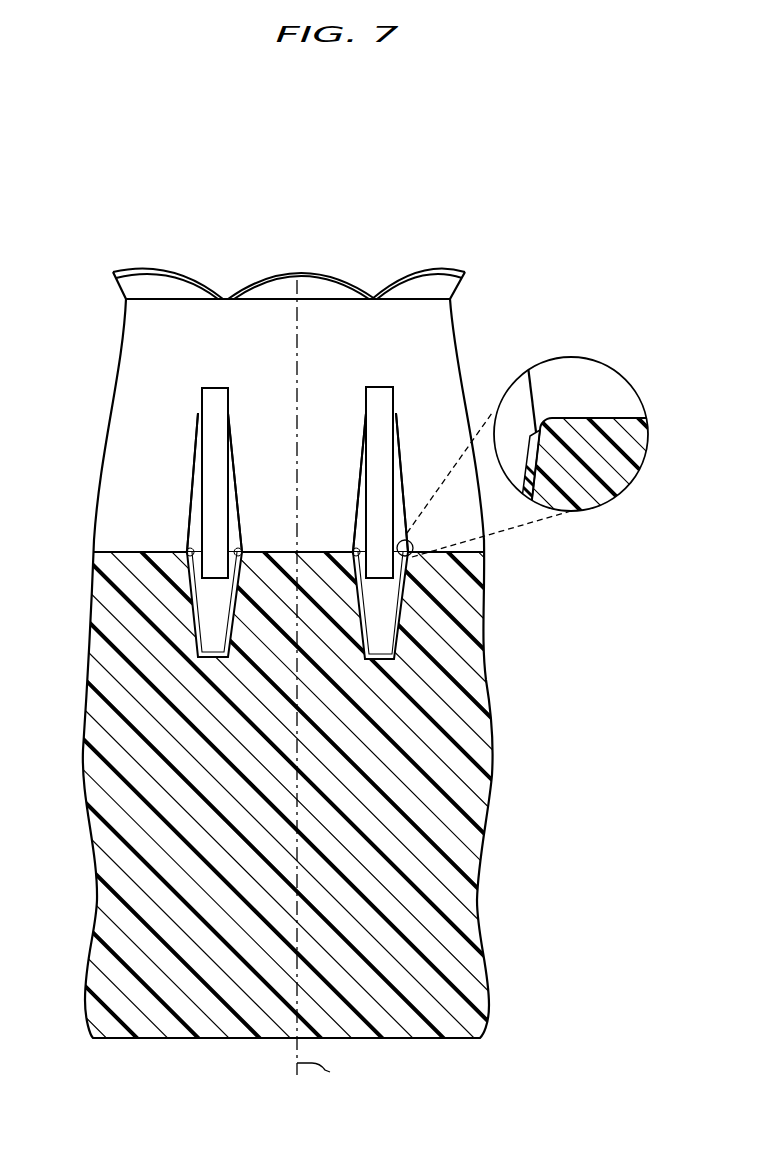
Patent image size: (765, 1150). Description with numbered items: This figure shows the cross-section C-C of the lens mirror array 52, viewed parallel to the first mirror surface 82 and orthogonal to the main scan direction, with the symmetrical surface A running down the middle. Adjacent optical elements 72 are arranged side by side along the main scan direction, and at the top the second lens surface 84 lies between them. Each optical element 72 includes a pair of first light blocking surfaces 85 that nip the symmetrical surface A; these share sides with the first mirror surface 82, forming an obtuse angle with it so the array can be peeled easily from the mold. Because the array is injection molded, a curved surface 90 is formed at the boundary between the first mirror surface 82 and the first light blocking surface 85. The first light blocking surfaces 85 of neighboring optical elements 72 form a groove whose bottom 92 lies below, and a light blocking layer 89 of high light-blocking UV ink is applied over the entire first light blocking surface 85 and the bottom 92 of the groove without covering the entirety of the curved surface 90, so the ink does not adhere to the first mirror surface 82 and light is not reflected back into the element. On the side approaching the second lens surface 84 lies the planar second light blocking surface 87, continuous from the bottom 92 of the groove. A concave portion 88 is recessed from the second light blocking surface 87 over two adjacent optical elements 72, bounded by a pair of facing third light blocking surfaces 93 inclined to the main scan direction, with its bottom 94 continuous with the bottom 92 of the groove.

The lens mirror array 52 is at (296, 186).
The optical element 72 is at (143, 258).
The first mirror surface 82 is at (140, 550).
The second lens surface 84 is at (308, 275).
The first light blocking surface 85 is at (226, 632).
The second light blocking surface 87 is at (257, 332).
The concave portion 88 is at (213, 388).
The light blocking layer 89 is at (190, 548).
The curved surface 90 is at (540, 420).
The bottom of the groove 92 is at (222, 662).
The third light blocking surface 93 is at (232, 470).
The bottom of the concave portion 94 is at (212, 637).